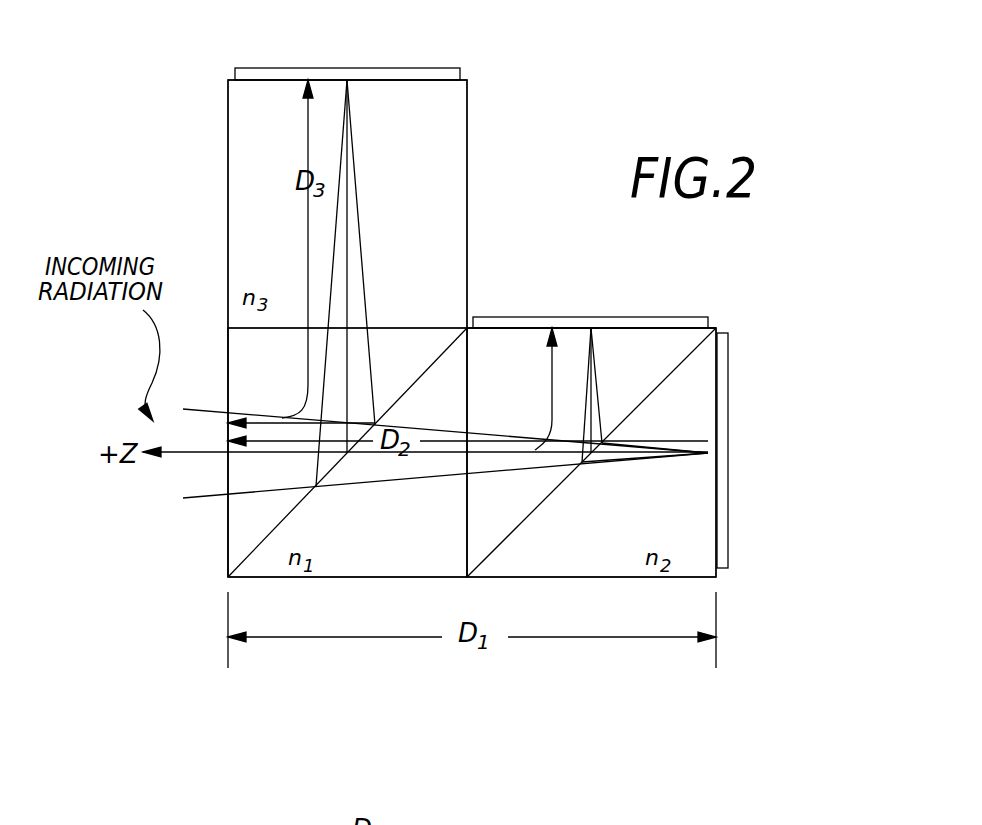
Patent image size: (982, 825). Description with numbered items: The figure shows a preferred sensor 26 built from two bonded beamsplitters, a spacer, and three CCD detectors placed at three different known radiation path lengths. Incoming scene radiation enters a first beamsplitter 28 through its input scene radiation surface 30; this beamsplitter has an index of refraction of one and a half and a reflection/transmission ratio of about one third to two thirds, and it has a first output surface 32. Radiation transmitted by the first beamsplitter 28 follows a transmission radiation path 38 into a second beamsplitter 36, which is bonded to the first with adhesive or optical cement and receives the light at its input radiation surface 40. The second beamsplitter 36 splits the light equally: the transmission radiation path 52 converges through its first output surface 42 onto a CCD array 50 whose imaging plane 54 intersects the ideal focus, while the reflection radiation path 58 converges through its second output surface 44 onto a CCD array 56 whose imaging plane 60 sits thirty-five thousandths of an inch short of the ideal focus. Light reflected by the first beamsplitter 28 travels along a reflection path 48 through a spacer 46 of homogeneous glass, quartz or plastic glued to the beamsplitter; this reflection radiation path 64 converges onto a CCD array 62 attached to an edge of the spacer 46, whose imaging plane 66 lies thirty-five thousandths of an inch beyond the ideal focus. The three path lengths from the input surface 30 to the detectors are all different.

The sensor 26 is at (552, 134).
The first beamsplitter 28 is at (285, 378).
The input scene radiation surface 30 is at (228, 365).
The first output surface 32 is at (467, 518).
The second beamsplitter 36 is at (583, 546).
The transmission radiation path 38 is at (550, 425).
The input radiation surface 40 is at (467, 388).
The first output surface 42 is at (717, 506).
The second output surface 44 is at (657, 328).
The spacer 46 is at (286, 223).
The reflection path 48 is at (348, 292).
The CCD array 50 is at (716, 452).
The transmission radiation path 52 is at (673, 450).
The imaging plane 54 is at (732, 365).
The CCD array 56 is at (591, 328).
The reflection radiation path 58 is at (587, 370).
The imaging plane 60 is at (500, 317).
The CCD array 62 is at (347, 80).
The reflection radiation path 64 is at (358, 205).
The imaging plane 66 is at (228, 80).